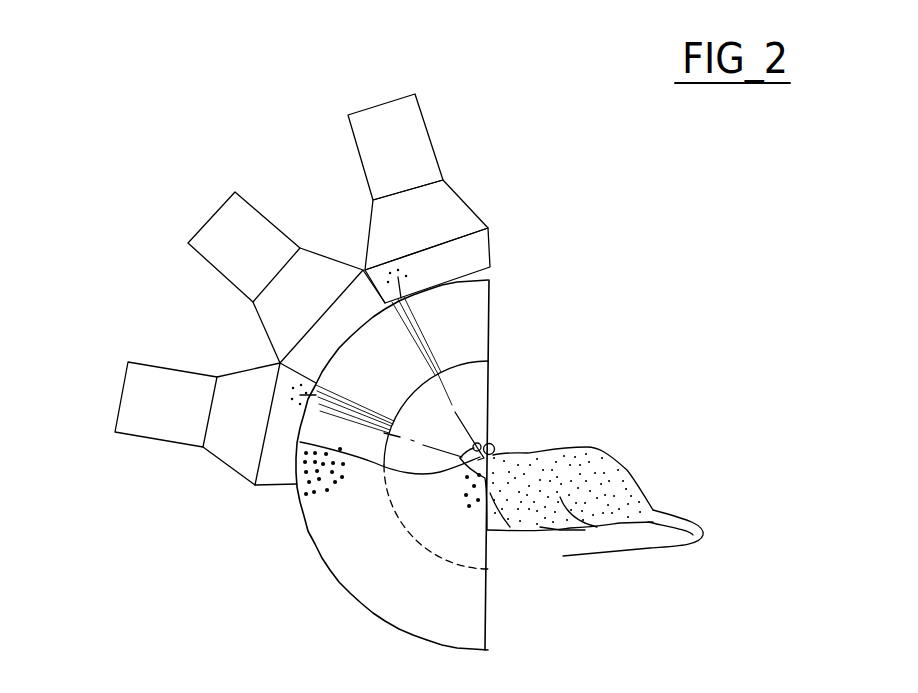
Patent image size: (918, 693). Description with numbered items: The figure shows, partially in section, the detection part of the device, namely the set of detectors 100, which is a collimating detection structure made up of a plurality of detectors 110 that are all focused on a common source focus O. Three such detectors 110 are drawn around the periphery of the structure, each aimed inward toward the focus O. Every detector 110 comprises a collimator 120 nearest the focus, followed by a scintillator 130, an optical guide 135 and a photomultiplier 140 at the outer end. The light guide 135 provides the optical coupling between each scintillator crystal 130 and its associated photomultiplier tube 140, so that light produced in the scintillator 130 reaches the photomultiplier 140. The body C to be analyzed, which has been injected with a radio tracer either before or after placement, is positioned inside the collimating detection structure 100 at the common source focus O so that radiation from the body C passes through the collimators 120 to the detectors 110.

The set of detectors 100 is at (193, 573).
The detector 110 is at (455, 143).
The collimator 120 is at (472, 311).
The scintillator 130 is at (473, 250).
The optical guide 135 is at (440, 215).
The photomultiplier 140 is at (397, 130).
The common source focus O is at (530, 446).
The body to be analyzed C is at (598, 482).